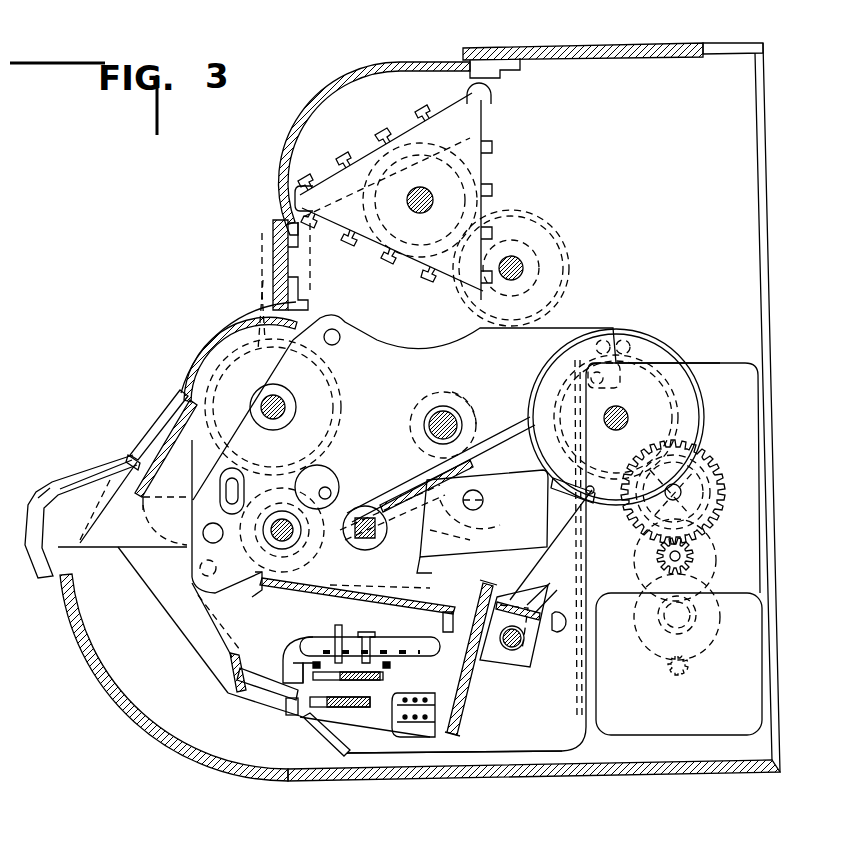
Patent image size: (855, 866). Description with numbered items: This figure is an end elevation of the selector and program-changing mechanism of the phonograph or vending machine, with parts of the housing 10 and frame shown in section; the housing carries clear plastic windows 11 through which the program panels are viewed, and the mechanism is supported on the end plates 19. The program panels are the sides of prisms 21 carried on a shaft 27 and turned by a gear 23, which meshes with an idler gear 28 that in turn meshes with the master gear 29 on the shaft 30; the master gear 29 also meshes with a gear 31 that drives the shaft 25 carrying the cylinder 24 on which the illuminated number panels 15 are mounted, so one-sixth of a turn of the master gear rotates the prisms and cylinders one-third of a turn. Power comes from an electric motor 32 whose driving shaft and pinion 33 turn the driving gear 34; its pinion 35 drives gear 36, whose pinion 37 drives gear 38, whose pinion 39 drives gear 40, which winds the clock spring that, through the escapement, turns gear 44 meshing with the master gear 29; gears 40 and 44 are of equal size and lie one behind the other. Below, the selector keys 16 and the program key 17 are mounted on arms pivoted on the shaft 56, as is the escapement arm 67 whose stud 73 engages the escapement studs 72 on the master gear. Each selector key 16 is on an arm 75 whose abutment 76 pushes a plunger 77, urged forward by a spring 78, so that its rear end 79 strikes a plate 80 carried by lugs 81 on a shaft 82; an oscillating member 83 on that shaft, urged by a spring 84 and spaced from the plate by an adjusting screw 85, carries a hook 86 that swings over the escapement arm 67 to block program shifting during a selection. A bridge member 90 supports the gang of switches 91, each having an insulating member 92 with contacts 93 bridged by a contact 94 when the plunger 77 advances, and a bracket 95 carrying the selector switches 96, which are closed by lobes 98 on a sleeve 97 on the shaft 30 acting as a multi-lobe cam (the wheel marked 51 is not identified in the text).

The housing 10 is at (593, 45).
The clear plastic window 11 is at (382, 62).
The number panel 15 is at (215, 350).
The selector key 16 is at (72, 488).
The program key 17 is at (141, 430).
The end plate 19 is at (278, 205).
The prism 21 is at (362, 158).
The gear 23 is at (470, 138).
The cylinder 24 is at (245, 345).
The shaft 25 is at (279, 398).
The shaft 27 is at (433, 196).
The idler gear 28 is at (548, 212).
The master gear 29 is at (398, 317).
The shaft 30 is at (441, 406).
The gear 31 is at (262, 292).
The electric motor 32 is at (703, 728).
The driving shaft and pinion 33 is at (680, 678).
The driving gear 34 is at (700, 655).
The pinion 35 is at (705, 620).
The gear 36 is at (718, 573).
The pinion 37 is at (688, 555).
The gear 38 is at (705, 498).
The pinion 39 is at (712, 462).
The gear 40 is at (700, 430).
The gear 44 is at (672, 378).
The wheel rim 51 is at (693, 384).
The shaft 56 is at (284, 545).
The escapement arm 67 is at (485, 478).
The escapement stud 72 is at (485, 492).
The stud 73 is at (484, 512).
The arm 75 is at (166, 512).
The abutment 76 is at (165, 597).
The plunger 77 is at (248, 693).
The spring 78 is at (420, 697).
The rear end 79 is at (447, 737).
The plate 80 is at (458, 712).
The lug 81 is at (500, 652).
The shaft 82 is at (513, 650).
The oscillating member 83 is at (535, 668).
The spring 84 is at (545, 595).
The adjusting screw 85 is at (562, 634).
The hook 86 is at (591, 487).
The bridge member 90 is at (325, 592).
The switch 91 is at (290, 718).
The insulating member 92 is at (413, 660).
The contact 93 is at (352, 640).
The contact 94 is at (295, 645).
The bracket 95 is at (415, 590).
The selector switch 96 is at (403, 470).
The sleeve 97 is at (421, 408).
The lobe 98 is at (455, 393).